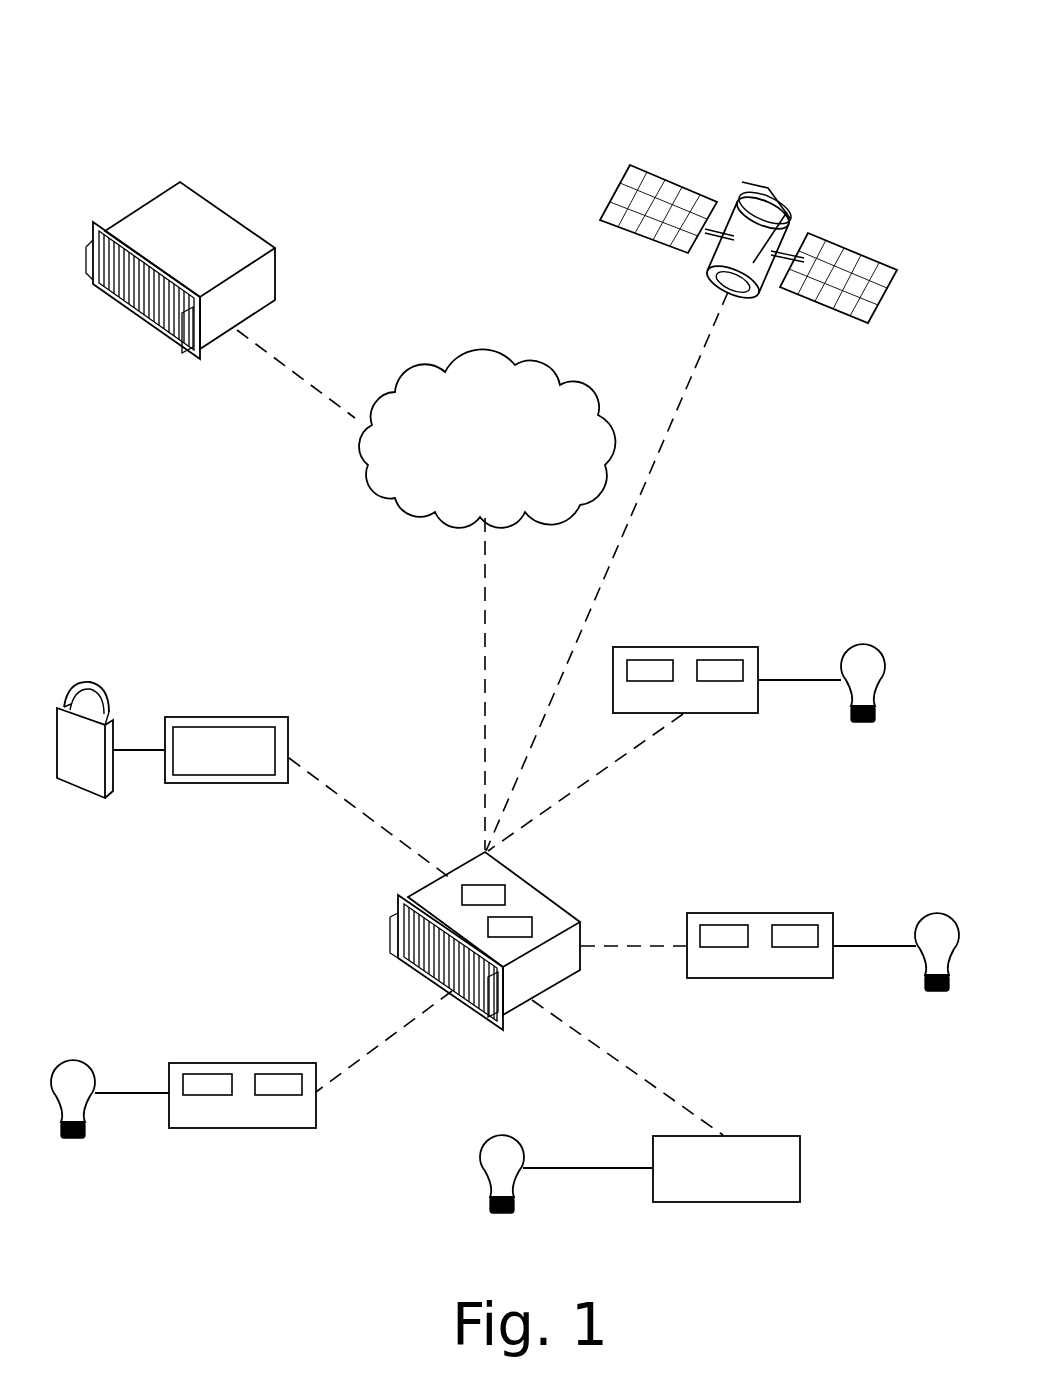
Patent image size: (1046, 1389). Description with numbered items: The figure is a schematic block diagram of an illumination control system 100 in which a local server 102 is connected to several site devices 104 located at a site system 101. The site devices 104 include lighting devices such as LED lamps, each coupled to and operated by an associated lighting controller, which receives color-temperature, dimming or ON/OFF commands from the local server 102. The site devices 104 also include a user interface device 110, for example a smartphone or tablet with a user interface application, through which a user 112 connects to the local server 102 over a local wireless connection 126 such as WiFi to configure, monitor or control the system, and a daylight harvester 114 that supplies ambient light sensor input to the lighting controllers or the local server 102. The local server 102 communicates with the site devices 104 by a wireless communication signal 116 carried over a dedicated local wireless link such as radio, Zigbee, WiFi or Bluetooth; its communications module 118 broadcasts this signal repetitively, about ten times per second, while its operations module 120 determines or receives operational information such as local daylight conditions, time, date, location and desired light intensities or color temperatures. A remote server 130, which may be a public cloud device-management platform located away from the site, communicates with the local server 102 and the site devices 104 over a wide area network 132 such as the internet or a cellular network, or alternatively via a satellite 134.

The illumination control system 100 is at (289, 90).
The site system 101 is at (826, 565).
The local server 102 is at (523, 878).
The site devices 104 is at (742, 628).
The user interface device 110 is at (227, 784).
The user 112 is at (82, 791).
The daylight harvester 114 is at (725, 1203).
The wireless communication signal 116 is at (632, 946).
The communications module 118 is at (482, 885).
The operations module 120 is at (525, 927).
The local wireless connection 126 is at (333, 790).
The remote server 130 is at (132, 213).
The wide area network (WAN) 132 is at (553, 373).
The satellite 134 is at (764, 205).